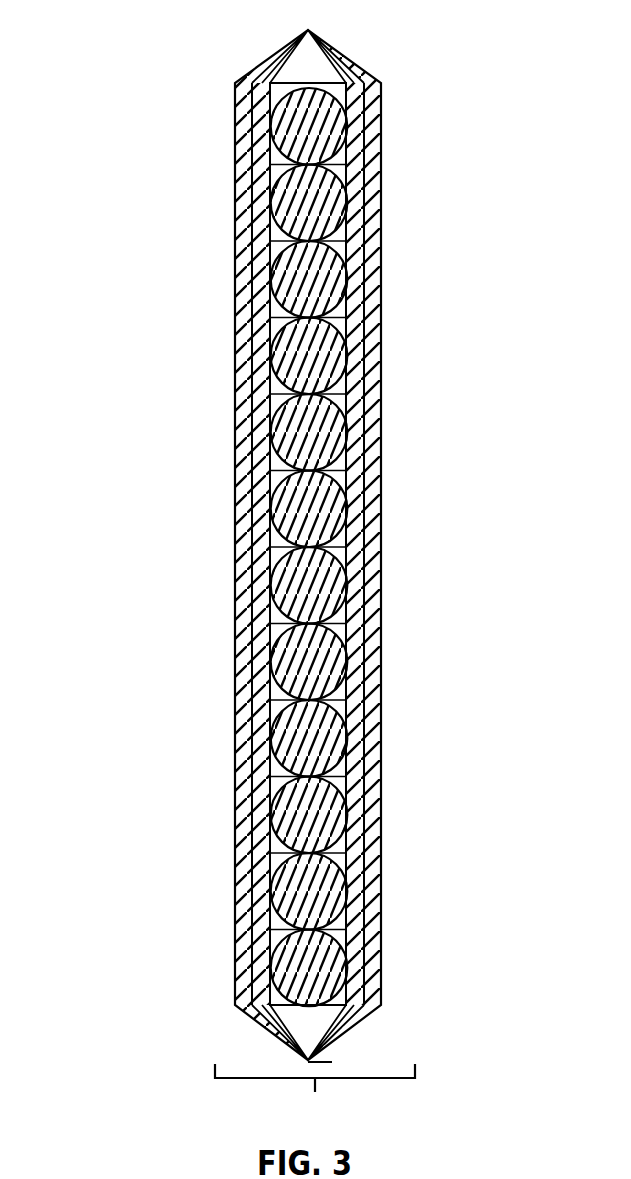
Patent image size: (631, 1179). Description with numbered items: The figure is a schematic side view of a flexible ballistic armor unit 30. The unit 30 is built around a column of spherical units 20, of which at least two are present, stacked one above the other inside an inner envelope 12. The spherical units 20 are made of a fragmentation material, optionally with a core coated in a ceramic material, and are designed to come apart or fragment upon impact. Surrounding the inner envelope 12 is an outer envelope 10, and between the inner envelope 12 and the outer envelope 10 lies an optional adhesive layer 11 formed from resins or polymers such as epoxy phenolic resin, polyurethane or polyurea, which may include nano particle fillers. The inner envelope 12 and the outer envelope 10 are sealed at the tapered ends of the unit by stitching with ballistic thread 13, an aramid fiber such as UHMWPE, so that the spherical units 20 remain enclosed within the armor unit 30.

The outer envelope 10 is at (224, 157).
The adhesive layer 11 is at (238, 245).
The inner envelope 12 is at (244, 332).
The ballistic thread 13 is at (380, 69).
The spherical units 20 is at (346, 417).
The flexible ballistic armor unit 30 is at (315, 1092).